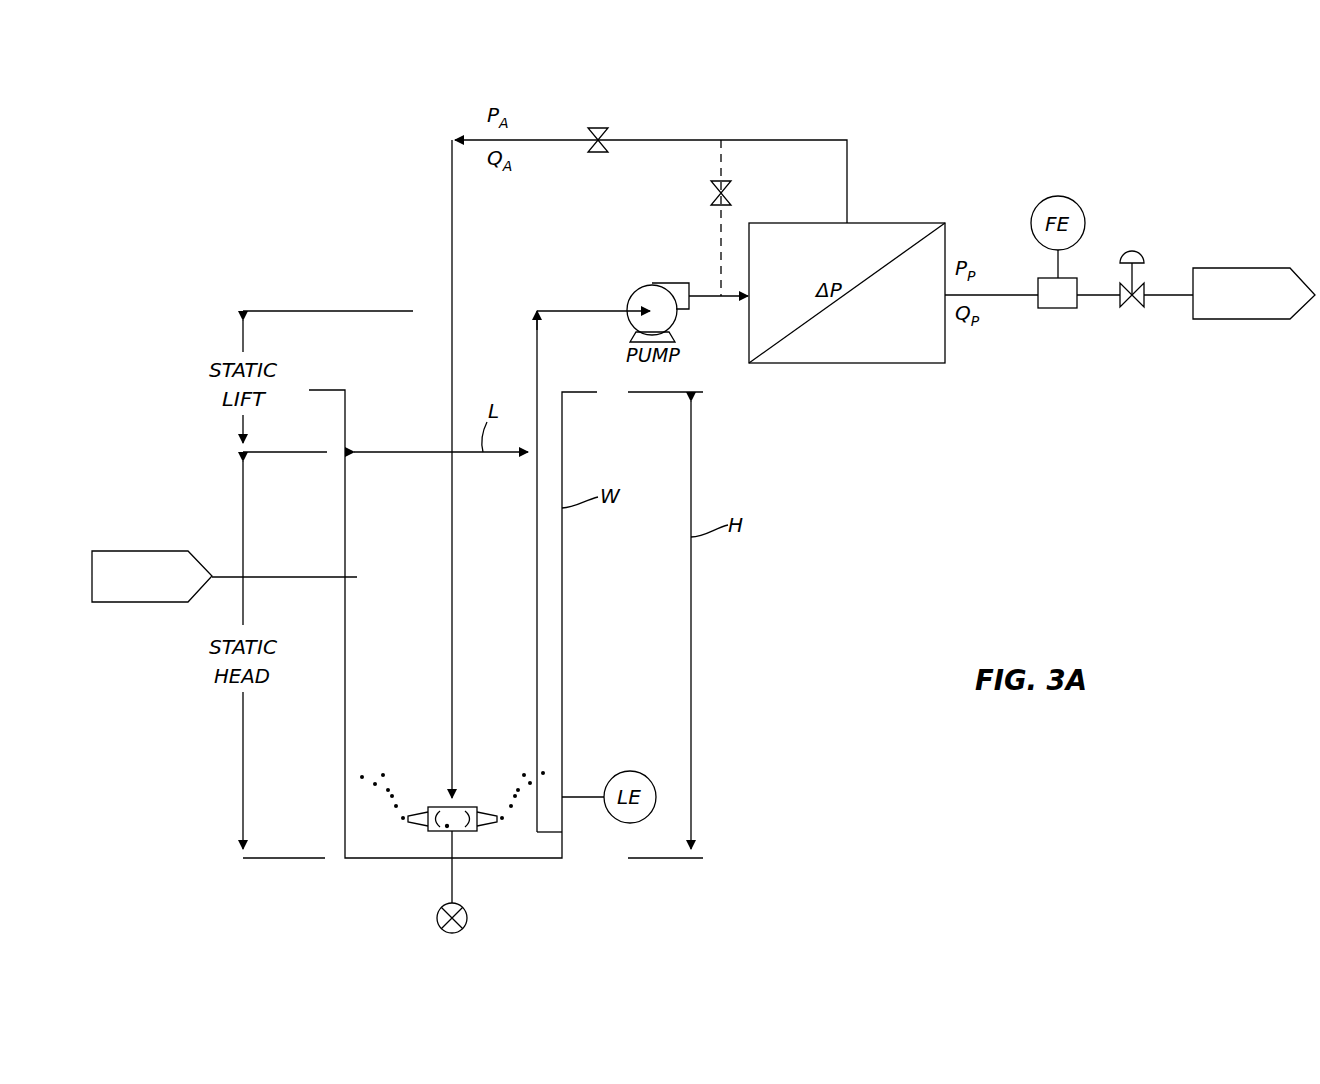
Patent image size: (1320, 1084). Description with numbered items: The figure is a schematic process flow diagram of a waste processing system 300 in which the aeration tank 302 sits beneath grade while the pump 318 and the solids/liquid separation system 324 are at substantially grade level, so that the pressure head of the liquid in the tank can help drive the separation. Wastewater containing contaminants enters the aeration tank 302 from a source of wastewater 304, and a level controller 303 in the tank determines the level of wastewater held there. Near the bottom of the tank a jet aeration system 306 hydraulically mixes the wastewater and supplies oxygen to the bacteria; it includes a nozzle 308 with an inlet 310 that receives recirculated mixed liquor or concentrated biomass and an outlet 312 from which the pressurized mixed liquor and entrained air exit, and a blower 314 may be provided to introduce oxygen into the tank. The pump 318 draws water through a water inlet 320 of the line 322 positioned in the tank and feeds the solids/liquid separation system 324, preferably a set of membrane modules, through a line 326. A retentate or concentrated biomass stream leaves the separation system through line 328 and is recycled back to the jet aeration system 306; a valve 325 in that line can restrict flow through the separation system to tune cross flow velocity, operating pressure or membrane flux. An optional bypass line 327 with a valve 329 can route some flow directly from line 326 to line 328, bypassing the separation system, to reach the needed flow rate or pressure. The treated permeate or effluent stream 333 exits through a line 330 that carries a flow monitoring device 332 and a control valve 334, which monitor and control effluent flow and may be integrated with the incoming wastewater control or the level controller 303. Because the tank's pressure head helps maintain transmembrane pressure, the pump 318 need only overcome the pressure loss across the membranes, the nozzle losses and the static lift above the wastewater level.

The waste processing system 300 is at (299, 182).
The aeration tank 302 is at (562, 677).
The level controller 303 is at (640, 771).
The source of wastewater 304 is at (151, 551).
The jet aeration system 306 is at (437, 840).
The nozzle 308 is at (469, 840).
The inlet 310 is at (455, 800).
The outlet 312 is at (498, 820).
The blower 314 is at (468, 918).
The pump 318 is at (650, 285).
The water inlet 320 is at (543, 832).
The line 322 is at (537, 635).
The solids/liquid separation system 324 is at (880, 366).
The valve 325 is at (600, 152).
The line 326 is at (705, 298).
The bypass line 327 is at (733, 162).
The line 328 is at (650, 138).
The valve 329 is at (733, 193).
The line 330 is at (1015, 295).
The flow monitoring device 332 is at (1065, 308).
The treated permeate/effluent stream 333 is at (1243, 268).
The control valve 334 is at (1130, 250).